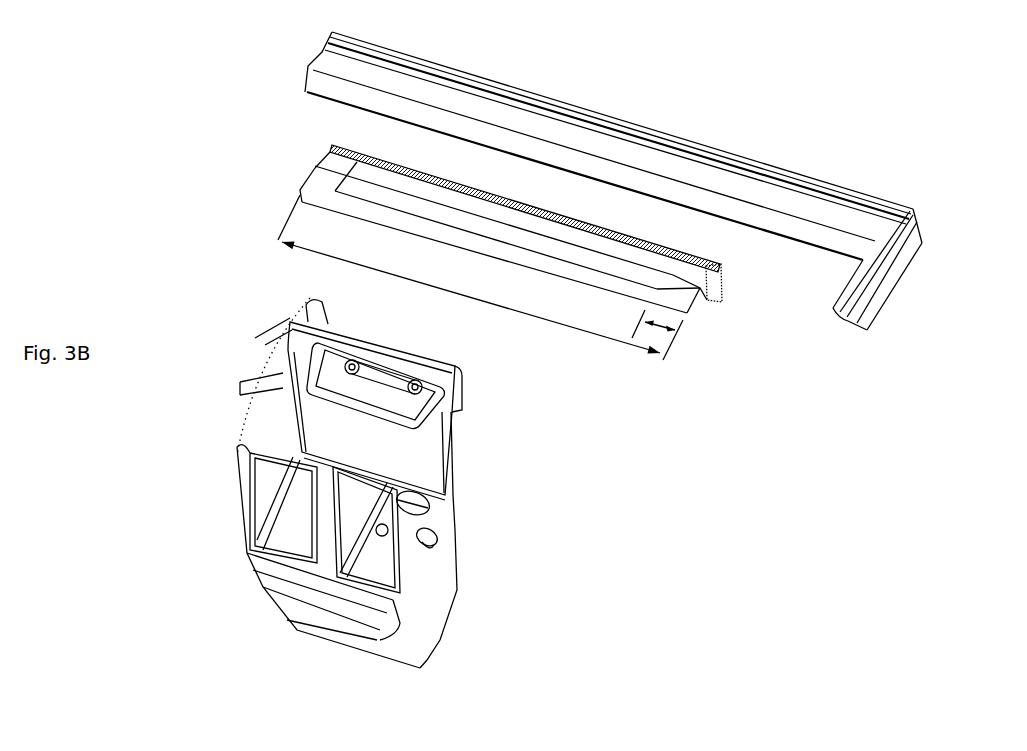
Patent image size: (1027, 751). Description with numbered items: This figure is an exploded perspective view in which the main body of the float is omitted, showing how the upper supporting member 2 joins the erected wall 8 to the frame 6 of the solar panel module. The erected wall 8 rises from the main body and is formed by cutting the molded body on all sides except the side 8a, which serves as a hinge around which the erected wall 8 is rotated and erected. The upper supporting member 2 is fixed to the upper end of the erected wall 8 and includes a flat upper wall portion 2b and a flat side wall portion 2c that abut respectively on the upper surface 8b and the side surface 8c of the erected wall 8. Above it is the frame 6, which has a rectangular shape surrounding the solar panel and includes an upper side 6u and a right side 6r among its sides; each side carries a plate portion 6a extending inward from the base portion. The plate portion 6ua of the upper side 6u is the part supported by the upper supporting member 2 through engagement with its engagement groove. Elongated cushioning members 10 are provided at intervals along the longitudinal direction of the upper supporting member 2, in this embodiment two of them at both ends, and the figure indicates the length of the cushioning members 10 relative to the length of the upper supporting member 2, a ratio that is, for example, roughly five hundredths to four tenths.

The frame 6 is at (632, 103).
The plate portion of the upper side 6ua is at (527, 128).
The plate portion 6a is at (325, 80).
The upper side 6u is at (722, 155).
The right side 6r is at (880, 305).
The upper supporting member 2 is at (745, 290).
The upper wall portion 2b is at (375, 173).
The side wall portion 2c is at (707, 292).
The cushioning member 10 is at (320, 183).
The erected wall 8 is at (258, 418).
The side 8a is at (327, 640).
The upper surface 8b is at (442, 378).
The side surface 8c is at (463, 383).